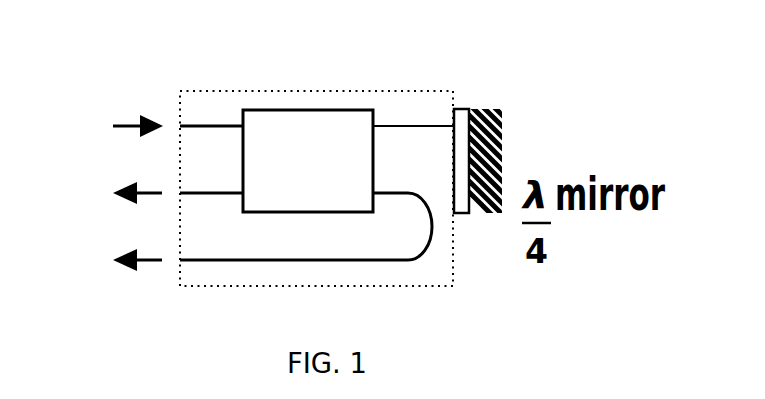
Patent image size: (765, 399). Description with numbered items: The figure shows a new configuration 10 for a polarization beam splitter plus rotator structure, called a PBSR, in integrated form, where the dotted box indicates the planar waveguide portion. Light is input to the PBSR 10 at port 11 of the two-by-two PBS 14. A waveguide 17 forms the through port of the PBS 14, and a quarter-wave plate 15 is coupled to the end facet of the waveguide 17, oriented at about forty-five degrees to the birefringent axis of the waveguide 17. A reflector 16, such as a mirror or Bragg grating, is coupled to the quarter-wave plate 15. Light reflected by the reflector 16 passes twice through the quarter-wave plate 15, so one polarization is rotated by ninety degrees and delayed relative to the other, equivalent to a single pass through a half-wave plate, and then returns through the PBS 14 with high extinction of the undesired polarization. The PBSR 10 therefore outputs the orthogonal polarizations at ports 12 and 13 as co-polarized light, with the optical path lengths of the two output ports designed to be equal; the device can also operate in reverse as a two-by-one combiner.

The PBSR configuration 10 is at (168, 27).
The input port 11 is at (98, 117).
The output port 12 is at (100, 182).
The output port 13 is at (100, 250).
The 2×2 polarization beam splitter 14 is at (298, 102).
The quarter-wave plate 15 is at (465, 97).
The reflector 16 is at (508, 105).
The waveguide 17 is at (415, 120).